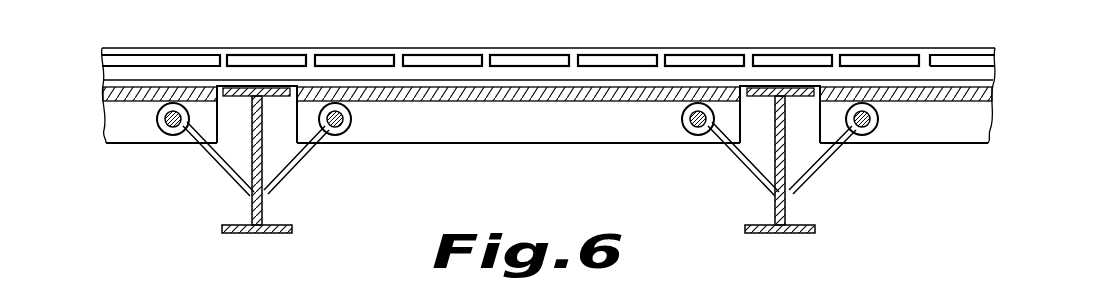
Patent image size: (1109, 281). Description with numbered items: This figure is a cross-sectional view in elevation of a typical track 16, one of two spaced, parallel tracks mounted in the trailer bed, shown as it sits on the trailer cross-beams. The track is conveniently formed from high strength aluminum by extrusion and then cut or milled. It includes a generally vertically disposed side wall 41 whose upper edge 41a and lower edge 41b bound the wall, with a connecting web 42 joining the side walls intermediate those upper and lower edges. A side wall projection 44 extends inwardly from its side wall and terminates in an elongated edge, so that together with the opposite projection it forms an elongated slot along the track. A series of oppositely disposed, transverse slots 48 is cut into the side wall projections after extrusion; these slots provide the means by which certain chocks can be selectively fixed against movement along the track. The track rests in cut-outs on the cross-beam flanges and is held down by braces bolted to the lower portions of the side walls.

The track 16 is at (504, 163).
The side wall 41 is at (572, 132).
The upper edge 41a is at (597, 48).
The lower edge 41b is at (615, 145).
The connecting web 42 is at (513, 102).
The side wall projection 44 is at (502, 54).
The transverse slots 48 is at (573, 57).